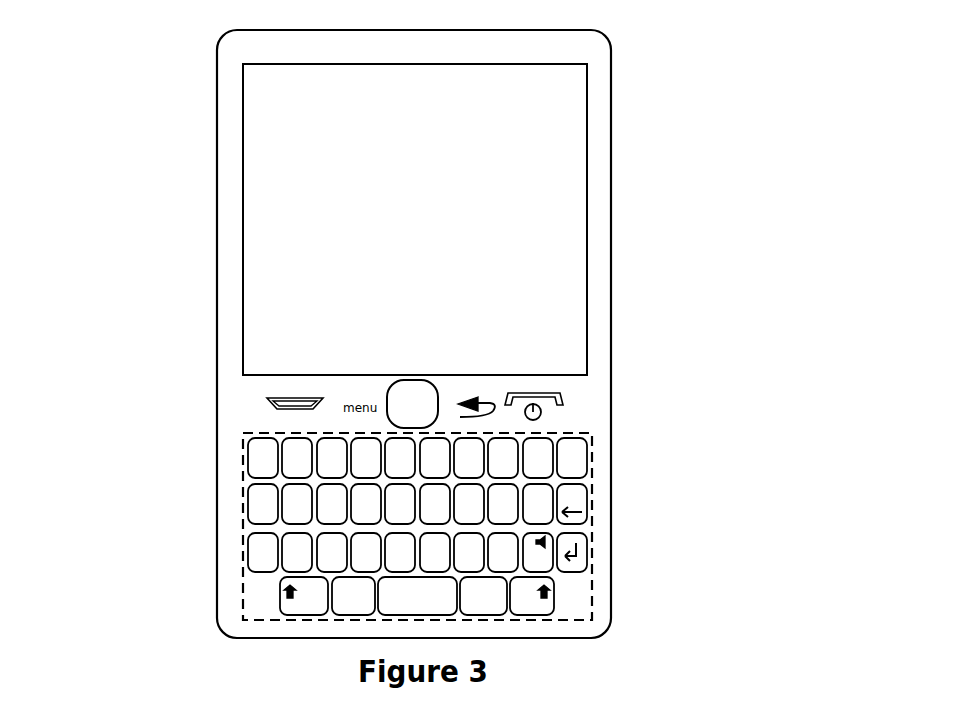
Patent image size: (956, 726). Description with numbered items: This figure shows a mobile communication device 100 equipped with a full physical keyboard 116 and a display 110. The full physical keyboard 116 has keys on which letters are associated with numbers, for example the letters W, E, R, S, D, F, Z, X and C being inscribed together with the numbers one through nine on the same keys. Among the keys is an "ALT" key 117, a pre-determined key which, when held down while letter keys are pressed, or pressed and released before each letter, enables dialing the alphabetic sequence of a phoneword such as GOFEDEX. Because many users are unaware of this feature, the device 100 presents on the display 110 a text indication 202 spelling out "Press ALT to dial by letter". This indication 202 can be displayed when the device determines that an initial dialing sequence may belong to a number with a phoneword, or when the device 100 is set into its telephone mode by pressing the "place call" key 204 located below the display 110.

The mobile communication device 100 is at (650, 116).
The display 110 is at (280, 190).
The indication 202 is at (416, 272).
The place call key 204 is at (288, 397).
The full physical keyboard 116 is at (592, 477).
The ALT key 117 is at (255, 537).